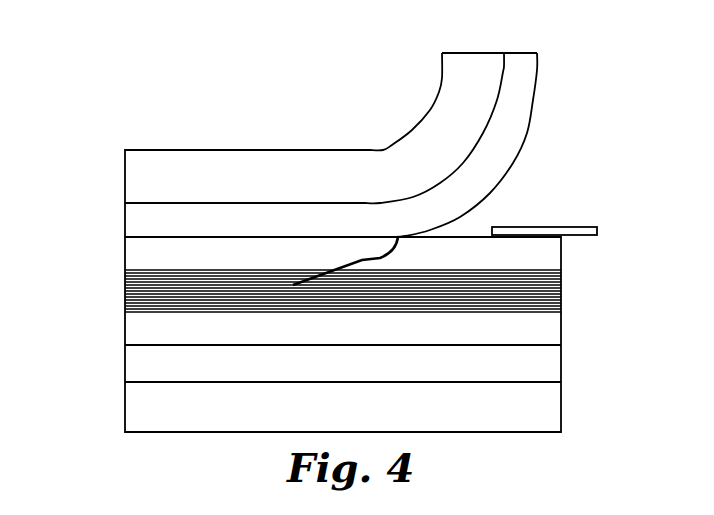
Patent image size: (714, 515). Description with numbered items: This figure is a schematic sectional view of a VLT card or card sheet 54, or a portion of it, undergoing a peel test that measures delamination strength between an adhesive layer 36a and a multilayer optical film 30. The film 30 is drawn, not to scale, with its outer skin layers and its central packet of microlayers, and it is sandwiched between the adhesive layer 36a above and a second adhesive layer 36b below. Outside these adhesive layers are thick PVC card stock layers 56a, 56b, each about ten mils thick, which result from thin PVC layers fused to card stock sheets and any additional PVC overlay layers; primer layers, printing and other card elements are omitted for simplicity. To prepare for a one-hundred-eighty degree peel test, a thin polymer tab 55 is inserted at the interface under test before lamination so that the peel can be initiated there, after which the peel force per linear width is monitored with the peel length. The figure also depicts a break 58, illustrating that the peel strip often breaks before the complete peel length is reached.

The VLT card or card sheet 54 is at (178, 121).
The PVC card stock layer 56a is at (135, 180).
The adhesive layer 36a is at (137, 221).
The multilayer optical film 30 is at (117, 238).
The adhesive layer 36b is at (133, 366).
The PVC card stock layer 56b is at (133, 406).
The thin polymer tab 55 is at (581, 231).
The break 58 is at (363, 259).